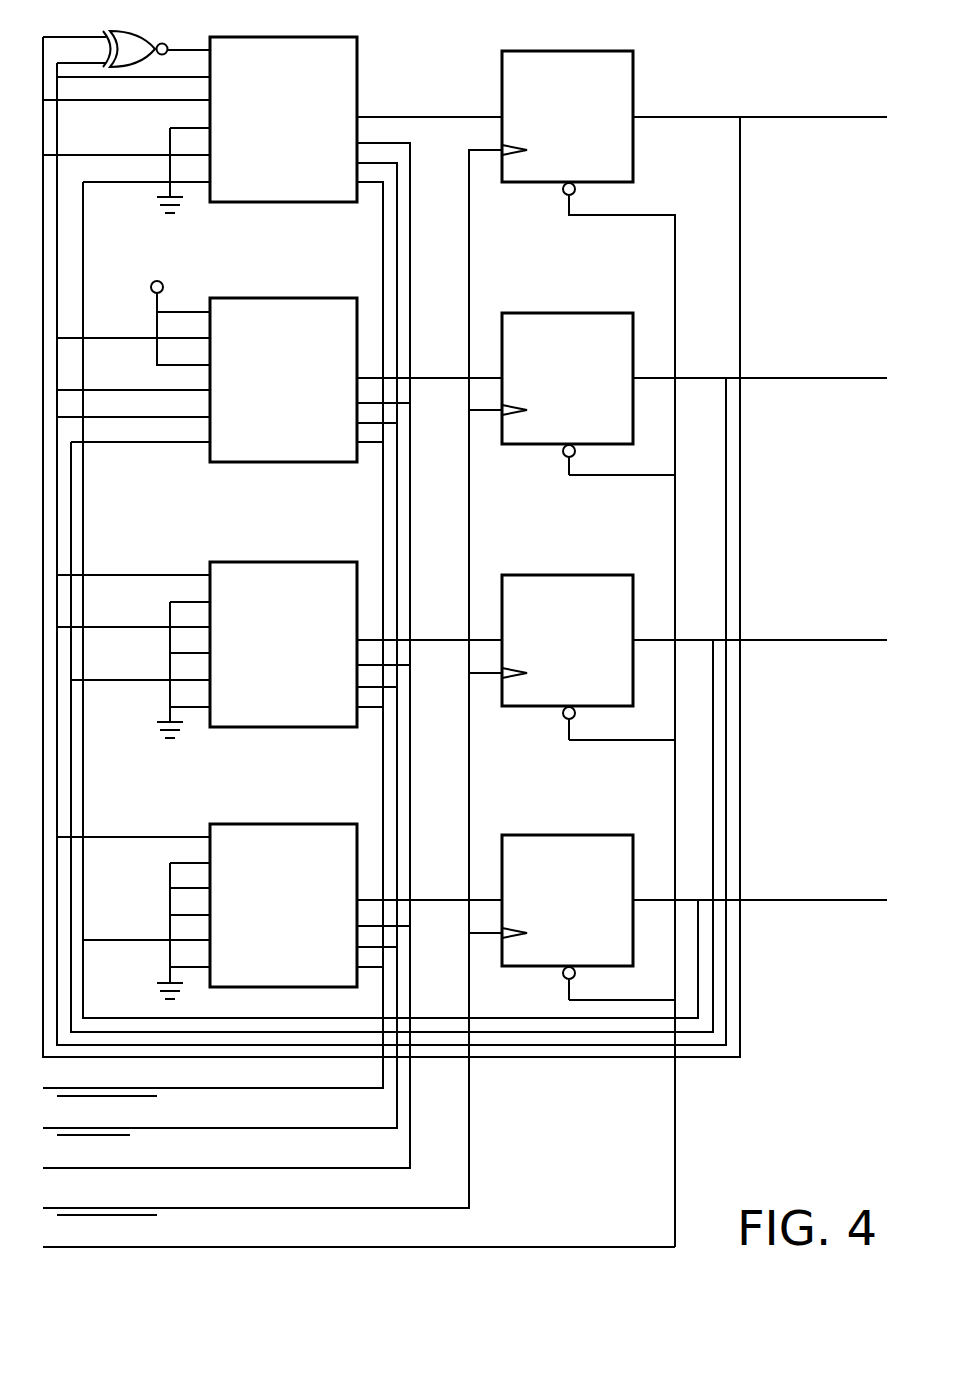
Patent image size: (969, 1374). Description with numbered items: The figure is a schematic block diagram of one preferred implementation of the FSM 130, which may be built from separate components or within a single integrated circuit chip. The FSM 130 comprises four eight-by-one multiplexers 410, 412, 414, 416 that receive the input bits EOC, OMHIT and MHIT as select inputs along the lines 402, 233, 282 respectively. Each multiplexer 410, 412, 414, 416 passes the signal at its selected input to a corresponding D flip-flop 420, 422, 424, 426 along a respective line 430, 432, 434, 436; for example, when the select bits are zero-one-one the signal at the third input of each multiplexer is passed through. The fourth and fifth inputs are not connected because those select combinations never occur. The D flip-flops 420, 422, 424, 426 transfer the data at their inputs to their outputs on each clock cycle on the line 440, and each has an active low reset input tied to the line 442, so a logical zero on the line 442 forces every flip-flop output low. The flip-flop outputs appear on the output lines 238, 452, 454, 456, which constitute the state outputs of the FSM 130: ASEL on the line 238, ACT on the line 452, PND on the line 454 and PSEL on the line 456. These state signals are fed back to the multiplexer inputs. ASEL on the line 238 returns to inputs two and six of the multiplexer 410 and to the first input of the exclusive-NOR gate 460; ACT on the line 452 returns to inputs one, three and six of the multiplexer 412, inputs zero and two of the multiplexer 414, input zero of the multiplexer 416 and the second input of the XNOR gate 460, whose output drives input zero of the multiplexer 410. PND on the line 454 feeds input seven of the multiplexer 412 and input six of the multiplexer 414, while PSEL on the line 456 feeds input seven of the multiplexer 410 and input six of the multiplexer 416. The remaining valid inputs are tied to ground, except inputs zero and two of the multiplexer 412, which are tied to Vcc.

The FSM 130 is at (465, 624).
The exclusive-NOR gate 460 is at (152, 29).
The multiplexer 410 is at (278, 37).
The multiplexer 412 is at (270, 298).
The multiplexer 414 is at (272, 562).
The multiplexer 416 is at (268, 824).
The D flip-flop 420 is at (560, 51).
The D flip-flop 422 is at (552, 313).
The D flip-flop 424 is at (555, 575).
The D flip-flop 426 is at (555, 835).
The line 430 is at (400, 117).
The line 432 is at (430, 378).
The line 434 is at (437, 640).
The line 436 is at (437, 900).
The output line 238 is at (770, 118).
The output line 452 is at (780, 380).
The output line 454 is at (780, 642).
The output line 456 is at (772, 902).
The line 402 is at (282, 1128).
The line 233 is at (292, 1168).
The line 282 is at (305, 1208).
The line 440 is at (313, 1247).
The line 442 is at (533, 1247).